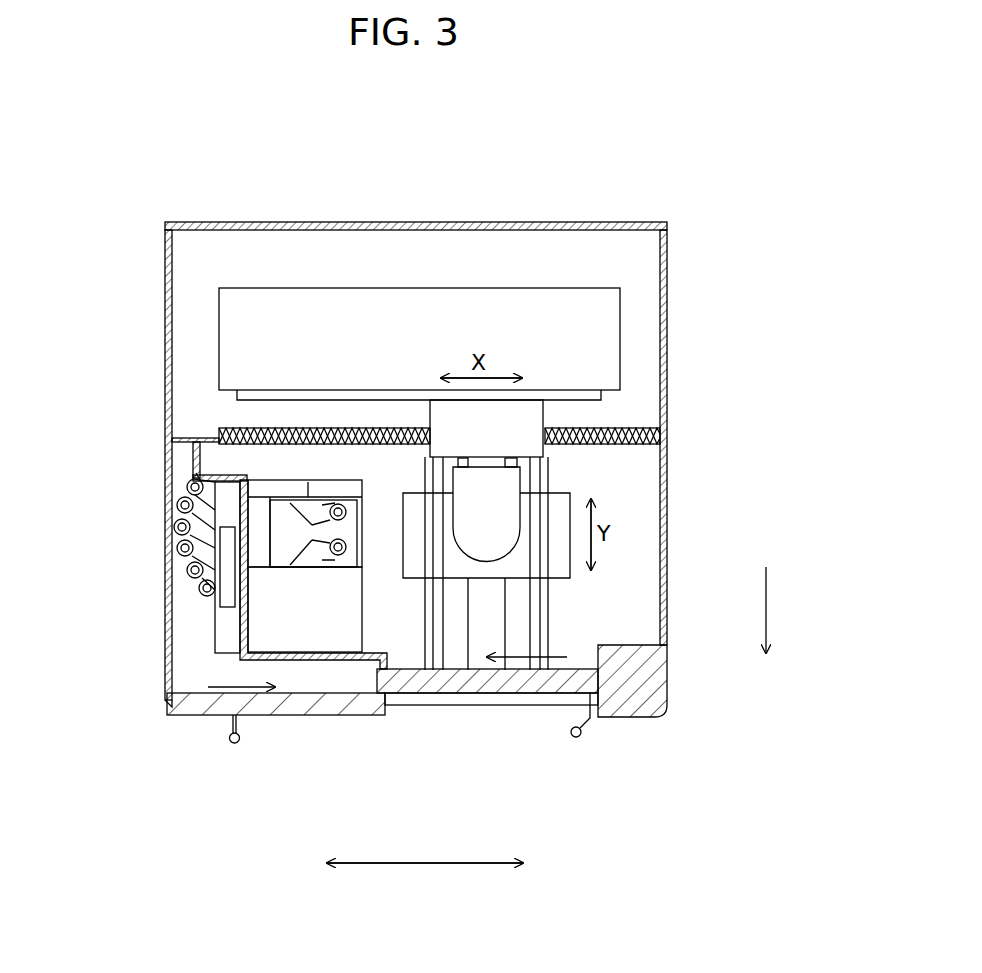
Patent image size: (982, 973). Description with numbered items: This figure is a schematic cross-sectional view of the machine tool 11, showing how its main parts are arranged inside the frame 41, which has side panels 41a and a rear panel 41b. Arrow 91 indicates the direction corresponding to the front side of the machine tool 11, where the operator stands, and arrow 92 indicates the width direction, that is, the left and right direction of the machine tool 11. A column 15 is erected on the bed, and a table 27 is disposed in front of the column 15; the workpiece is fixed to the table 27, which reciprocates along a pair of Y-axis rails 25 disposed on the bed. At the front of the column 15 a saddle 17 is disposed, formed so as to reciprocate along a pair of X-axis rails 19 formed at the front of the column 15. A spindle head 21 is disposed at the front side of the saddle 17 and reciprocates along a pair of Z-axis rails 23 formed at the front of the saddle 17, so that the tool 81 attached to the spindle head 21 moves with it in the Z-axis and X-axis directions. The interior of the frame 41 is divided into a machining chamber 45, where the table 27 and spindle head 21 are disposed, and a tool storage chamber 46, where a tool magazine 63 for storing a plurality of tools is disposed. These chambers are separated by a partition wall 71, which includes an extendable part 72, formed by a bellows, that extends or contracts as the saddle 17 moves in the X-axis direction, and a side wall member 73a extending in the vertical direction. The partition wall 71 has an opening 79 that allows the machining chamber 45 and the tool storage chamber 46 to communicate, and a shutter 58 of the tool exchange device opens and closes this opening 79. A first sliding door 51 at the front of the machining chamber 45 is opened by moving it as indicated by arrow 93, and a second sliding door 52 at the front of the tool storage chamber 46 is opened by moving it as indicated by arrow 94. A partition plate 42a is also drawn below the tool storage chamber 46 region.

The machine tool 11 is at (597, 170).
The column 15 is at (608, 314).
The saddle 17 is at (520, 410).
The X-axis rails 19 is at (584, 394).
The spindle head 21 is at (510, 483).
The Z-axis rails 23 is at (510, 457).
The Y-axis rails 25 is at (540, 615).
The table 27 is at (553, 568).
The frame 41 is at (260, 222).
The side panels 41a is at (165, 262).
The rear panel 41b is at (437, 222).
The partition plate 42a is at (290, 662).
The machining chamber 45 is at (640, 527).
The tool storage chamber 46 is at (200, 680).
The first sliding door 51 is at (485, 675).
The second sliding door 52 is at (322, 715).
The shutter 58 is at (270, 620).
The tool magazine 63 is at (185, 503).
The partition wall 71 is at (87, 378).
The extendable part 72 is at (240, 428).
The side wall member 73a is at (193, 457).
The opening 79 is at (272, 522).
The tool 81 is at (183, 525).
The arrow indicating front side 91 is at (770, 603).
The arrow indicating width direction 92 is at (436, 865).
The arrow indicating first sliding door movement 93 is at (527, 662).
The arrow indicating second sliding door movement 94 is at (218, 690).